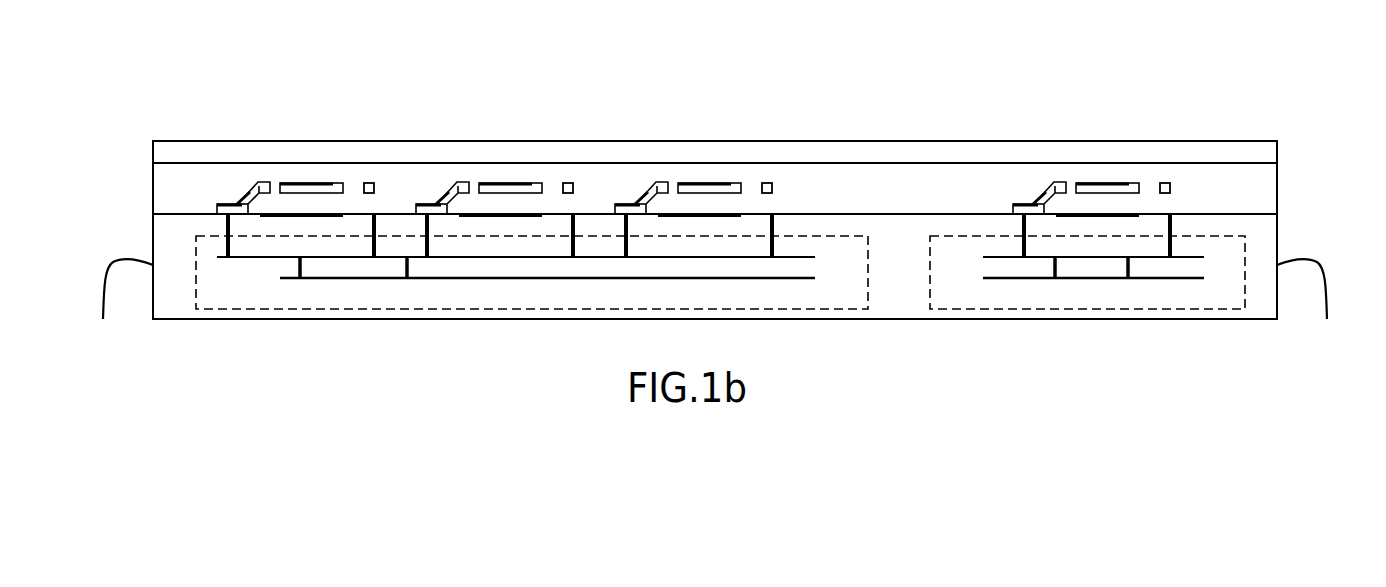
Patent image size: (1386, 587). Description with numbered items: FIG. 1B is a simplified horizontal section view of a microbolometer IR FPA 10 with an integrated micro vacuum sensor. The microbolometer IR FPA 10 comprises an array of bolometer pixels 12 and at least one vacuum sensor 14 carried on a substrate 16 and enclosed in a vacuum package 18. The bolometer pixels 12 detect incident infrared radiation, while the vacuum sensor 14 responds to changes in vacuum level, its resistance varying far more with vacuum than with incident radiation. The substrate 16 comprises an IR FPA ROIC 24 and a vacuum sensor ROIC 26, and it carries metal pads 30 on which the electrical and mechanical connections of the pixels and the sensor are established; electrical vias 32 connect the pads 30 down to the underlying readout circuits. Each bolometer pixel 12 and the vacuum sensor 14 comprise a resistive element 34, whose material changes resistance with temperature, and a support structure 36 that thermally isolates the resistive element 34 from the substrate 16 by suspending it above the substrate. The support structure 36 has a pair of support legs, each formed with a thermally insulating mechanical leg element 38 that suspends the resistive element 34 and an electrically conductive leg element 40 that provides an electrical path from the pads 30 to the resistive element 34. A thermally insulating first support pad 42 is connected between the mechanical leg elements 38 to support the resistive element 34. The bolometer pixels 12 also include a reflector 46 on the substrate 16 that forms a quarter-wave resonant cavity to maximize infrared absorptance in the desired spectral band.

The microbolometer IR FPA 10 is at (244, 73).
The bolometer pixel 12 is at (376, 172).
The vacuum sensor 14 is at (1194, 185).
The substrate 16 is at (909, 306).
The vacuum package 18 is at (887, 140).
The IR FPA ROIC 24 is at (467, 310).
The vacuum sensor ROIC 26 is at (1100, 310).
The metal pad 30 is at (224, 203).
The electrical via 32 is at (228, 236).
The resistive element 34 is at (500, 182).
The support structure 36 is at (795, 172).
The mechanical leg element 38 is at (668, 194).
The electrically conductive leg element 40 is at (445, 196).
The first support pad 42 is at (542, 192).
The reflector 46 is at (708, 208).